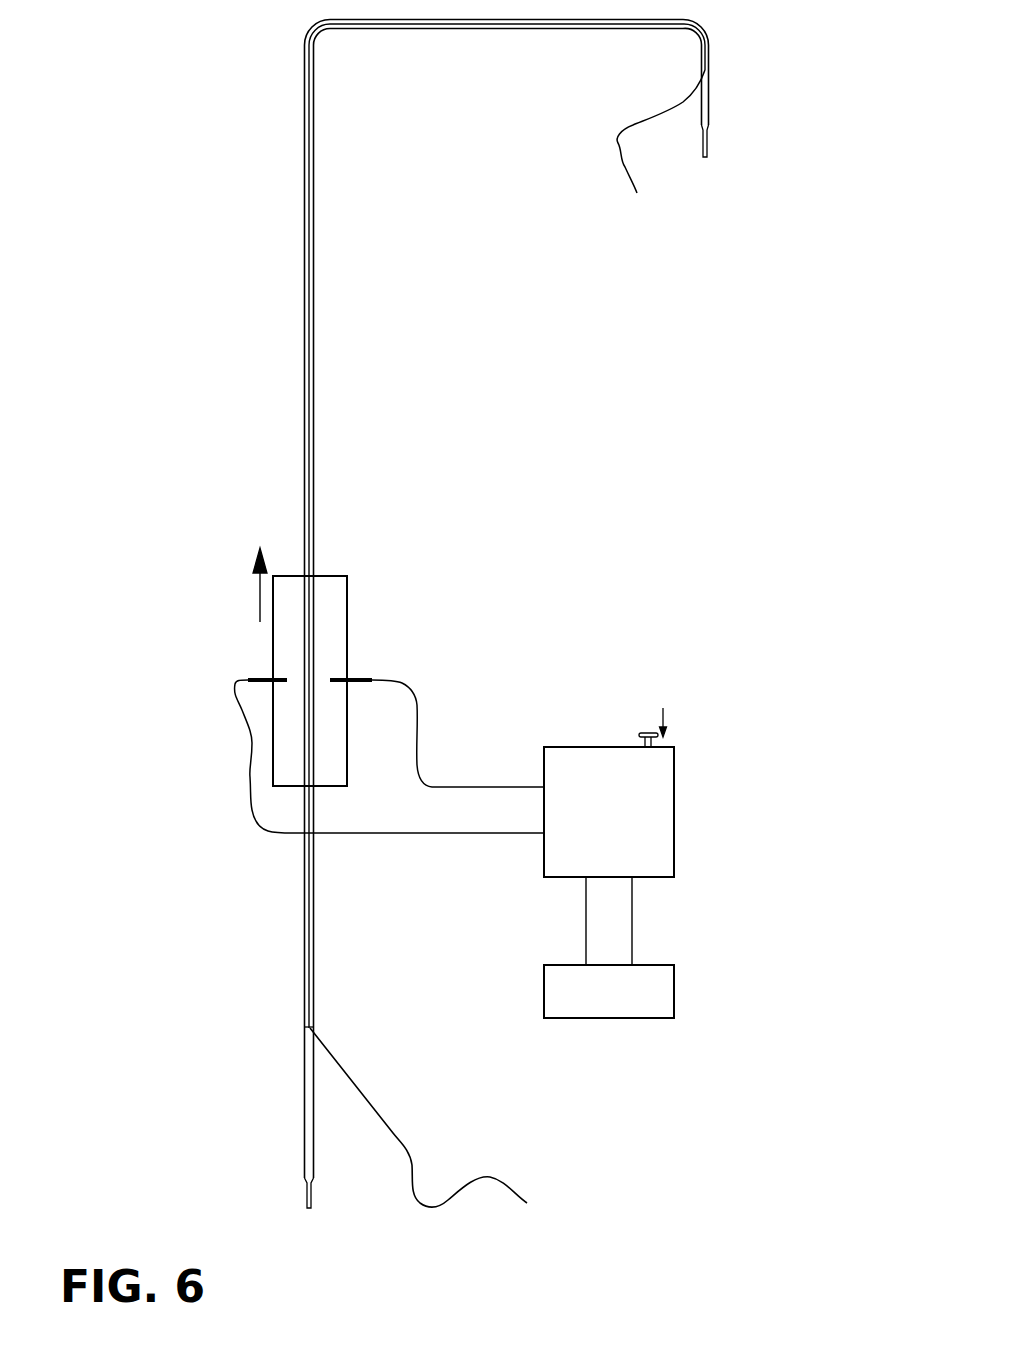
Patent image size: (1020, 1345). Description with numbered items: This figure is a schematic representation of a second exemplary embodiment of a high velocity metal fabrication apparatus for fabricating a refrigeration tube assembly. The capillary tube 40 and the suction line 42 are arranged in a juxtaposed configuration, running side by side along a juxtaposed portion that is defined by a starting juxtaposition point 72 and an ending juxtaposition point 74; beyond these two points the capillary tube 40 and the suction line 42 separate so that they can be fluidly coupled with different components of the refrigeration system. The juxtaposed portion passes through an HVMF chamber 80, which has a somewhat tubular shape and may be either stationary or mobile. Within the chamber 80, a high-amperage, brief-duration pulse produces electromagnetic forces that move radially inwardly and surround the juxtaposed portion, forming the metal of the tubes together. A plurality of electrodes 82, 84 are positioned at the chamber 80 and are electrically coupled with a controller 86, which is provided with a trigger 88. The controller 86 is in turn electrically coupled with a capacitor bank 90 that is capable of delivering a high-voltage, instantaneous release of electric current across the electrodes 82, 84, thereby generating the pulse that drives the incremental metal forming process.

The capillary tube 40 is at (367, 1098).
The suction line 42 is at (308, 1115).
The starting juxtaposition point 72 is at (312, 1027).
The ending juxtaposition point 74 is at (703, 65).
The HVMF chamber 80 is at (347, 600).
The electrode 82 is at (358, 680).
The electrode 84 is at (263, 680).
The controller 86 is at (674, 829).
The trigger 88 is at (645, 733).
The capacitor bank 90 is at (674, 988).